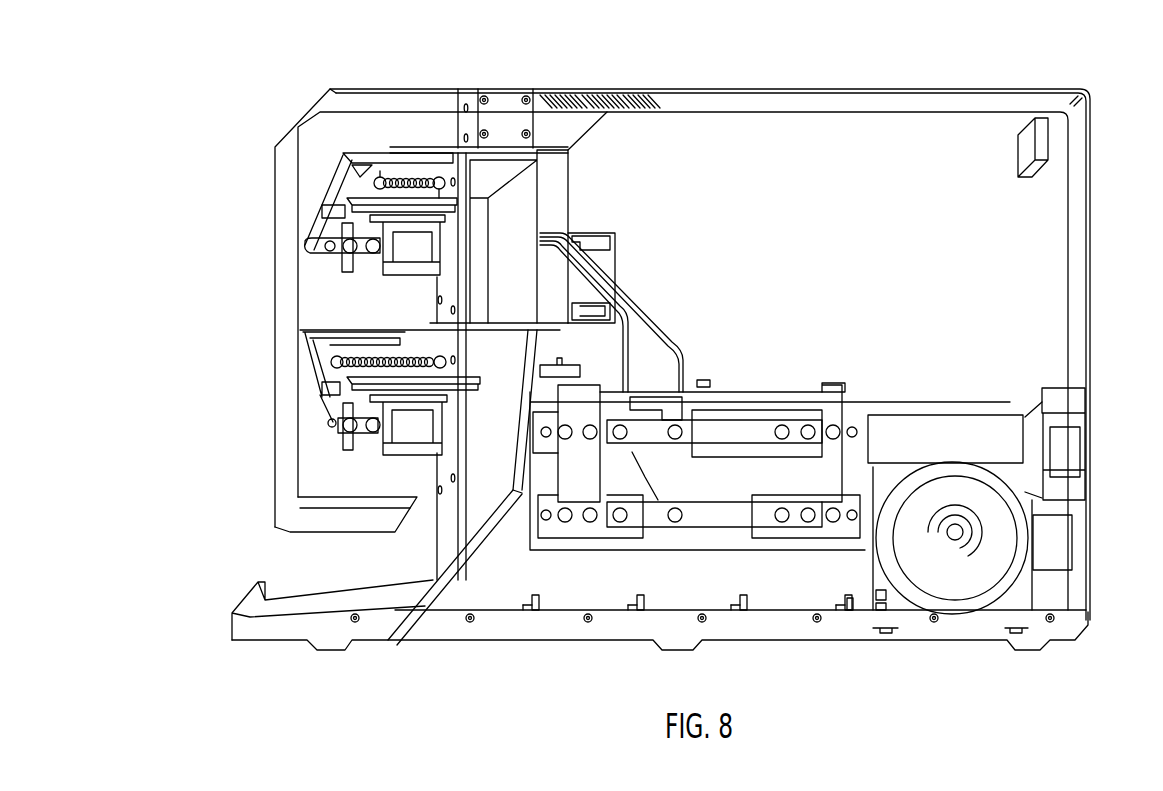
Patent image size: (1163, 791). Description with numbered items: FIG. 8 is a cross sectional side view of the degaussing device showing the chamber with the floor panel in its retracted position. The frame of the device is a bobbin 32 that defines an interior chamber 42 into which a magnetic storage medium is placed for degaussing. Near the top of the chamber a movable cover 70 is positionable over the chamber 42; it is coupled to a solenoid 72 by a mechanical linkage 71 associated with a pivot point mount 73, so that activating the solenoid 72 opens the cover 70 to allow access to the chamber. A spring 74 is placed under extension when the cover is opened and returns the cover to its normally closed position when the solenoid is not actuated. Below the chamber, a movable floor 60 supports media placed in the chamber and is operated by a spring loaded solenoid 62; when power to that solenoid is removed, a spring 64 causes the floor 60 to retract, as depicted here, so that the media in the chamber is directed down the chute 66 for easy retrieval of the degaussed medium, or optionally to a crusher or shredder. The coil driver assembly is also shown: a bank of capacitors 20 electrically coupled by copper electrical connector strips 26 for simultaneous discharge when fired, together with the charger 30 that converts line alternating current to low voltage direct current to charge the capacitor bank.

The capacitors 20 is at (895, 103).
The copper electrical connector strips 26 is at (595, 618).
The charger 30 is at (1020, 565).
The bobbin 32 is at (605, 112).
The interior chamber 42 is at (508, 110).
The movable floor 60 is at (317, 338).
The spring loaded solenoid 62 is at (335, 405).
The spring 64 is at (322, 385).
The chute 66 is at (385, 577).
The movable cover 70 is at (340, 174).
The mechanical linkage 71 is at (366, 183).
The solenoid 72 is at (402, 247).
The pivot point mount 73 is at (340, 250).
The spring 74 is at (310, 238).